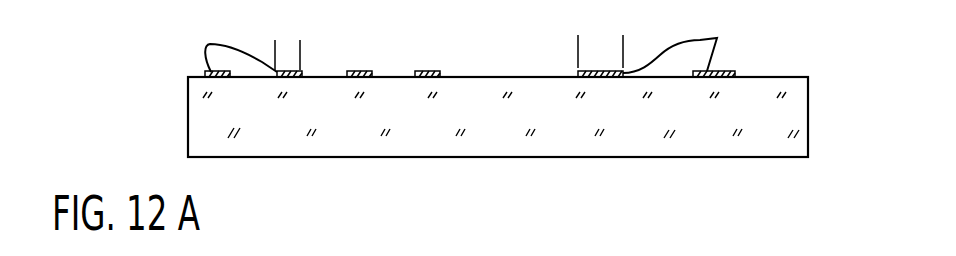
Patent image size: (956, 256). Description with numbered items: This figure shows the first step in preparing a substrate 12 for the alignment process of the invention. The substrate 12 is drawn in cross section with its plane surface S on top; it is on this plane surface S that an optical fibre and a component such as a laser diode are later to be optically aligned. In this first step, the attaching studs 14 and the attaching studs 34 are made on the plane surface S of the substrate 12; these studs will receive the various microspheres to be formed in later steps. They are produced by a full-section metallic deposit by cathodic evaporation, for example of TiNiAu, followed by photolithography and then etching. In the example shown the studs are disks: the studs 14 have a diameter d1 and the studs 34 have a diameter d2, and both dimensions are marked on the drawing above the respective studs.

The substrate 12 is at (800, 120).
The attaching studs 14 is at (209, 44).
The attaching studs 34 is at (717, 38).
The plane surface S is at (474, 77).
The diameter d1 is at (257, 45).
The diameter d2 is at (643, 45).